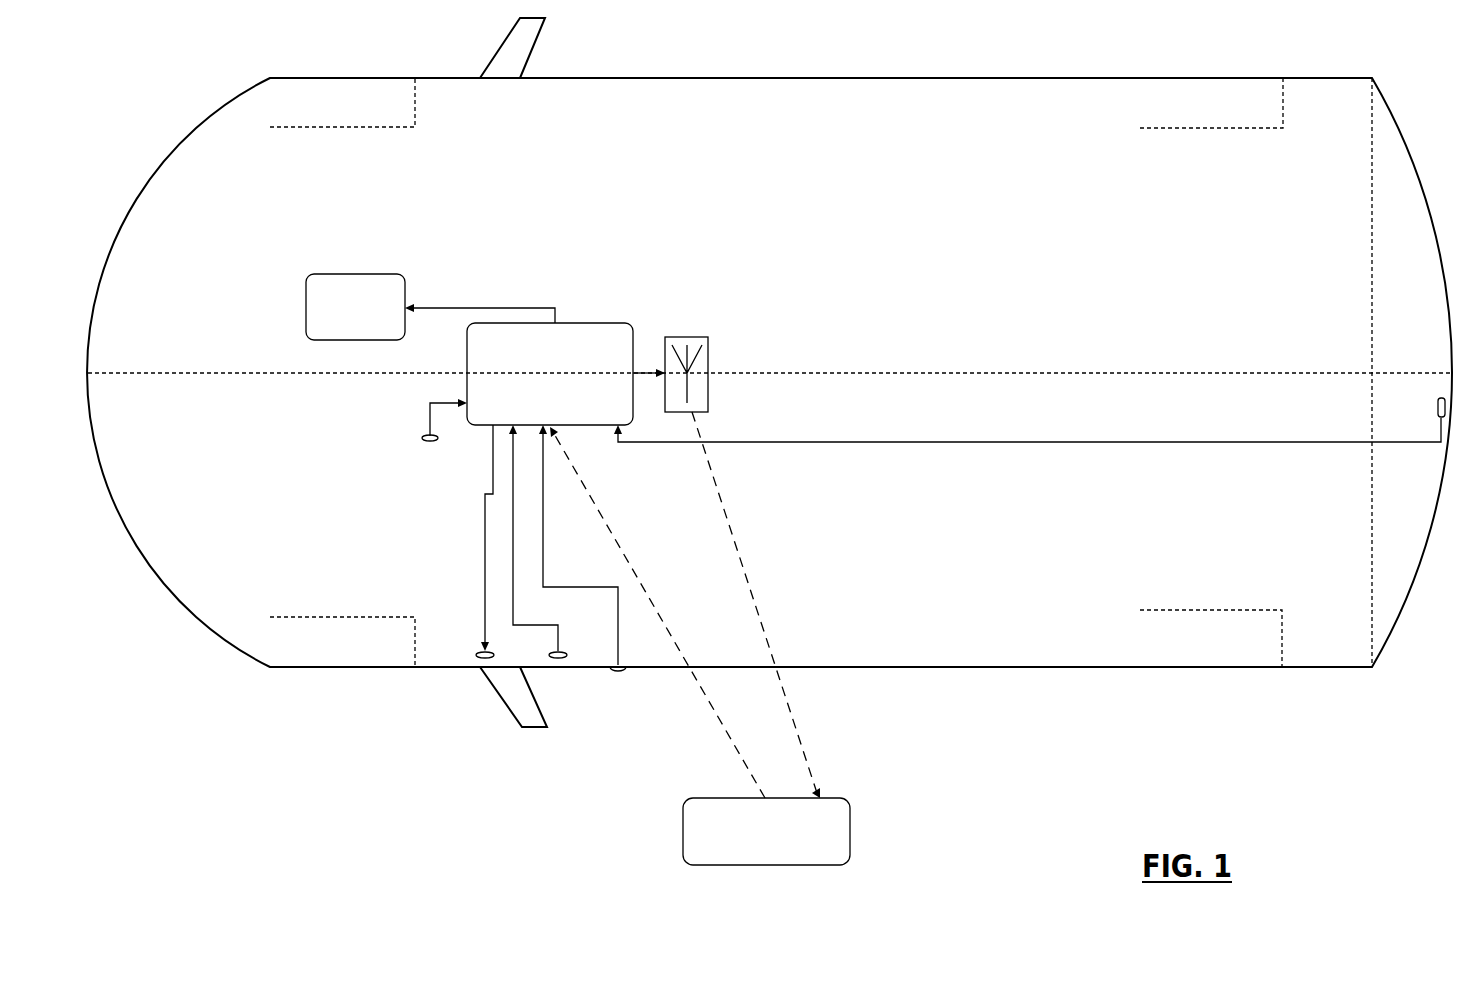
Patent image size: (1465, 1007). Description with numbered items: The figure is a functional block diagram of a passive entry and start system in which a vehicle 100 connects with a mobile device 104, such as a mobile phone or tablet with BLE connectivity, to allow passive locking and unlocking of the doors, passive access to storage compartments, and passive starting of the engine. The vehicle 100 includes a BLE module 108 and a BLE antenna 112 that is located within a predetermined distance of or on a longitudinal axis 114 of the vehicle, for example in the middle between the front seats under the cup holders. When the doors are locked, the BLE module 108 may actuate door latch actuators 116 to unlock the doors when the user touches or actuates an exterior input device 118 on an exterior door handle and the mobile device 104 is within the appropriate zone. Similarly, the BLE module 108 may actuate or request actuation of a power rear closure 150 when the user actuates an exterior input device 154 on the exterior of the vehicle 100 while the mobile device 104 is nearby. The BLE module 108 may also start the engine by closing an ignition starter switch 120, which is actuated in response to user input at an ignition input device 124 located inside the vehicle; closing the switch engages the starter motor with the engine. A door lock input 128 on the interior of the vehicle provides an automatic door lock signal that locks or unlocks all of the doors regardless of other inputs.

The vehicle 100 is at (233, 653).
The mobile device 104 is at (730, 798).
The BLE module 108 is at (620, 322).
The BLE antenna 112 is at (708, 400).
The longitudinal axis 114 is at (768, 373).
The door latch actuators 116 is at (480, 650).
The exterior input device 118 is at (617, 673).
The ignition starter switch 120 is at (368, 272).
The ignition input device 124 is at (427, 433).
The door lock input 128 is at (558, 660).
The power rear closure 150 is at (1370, 500).
The exterior input device 154 is at (1436, 406).